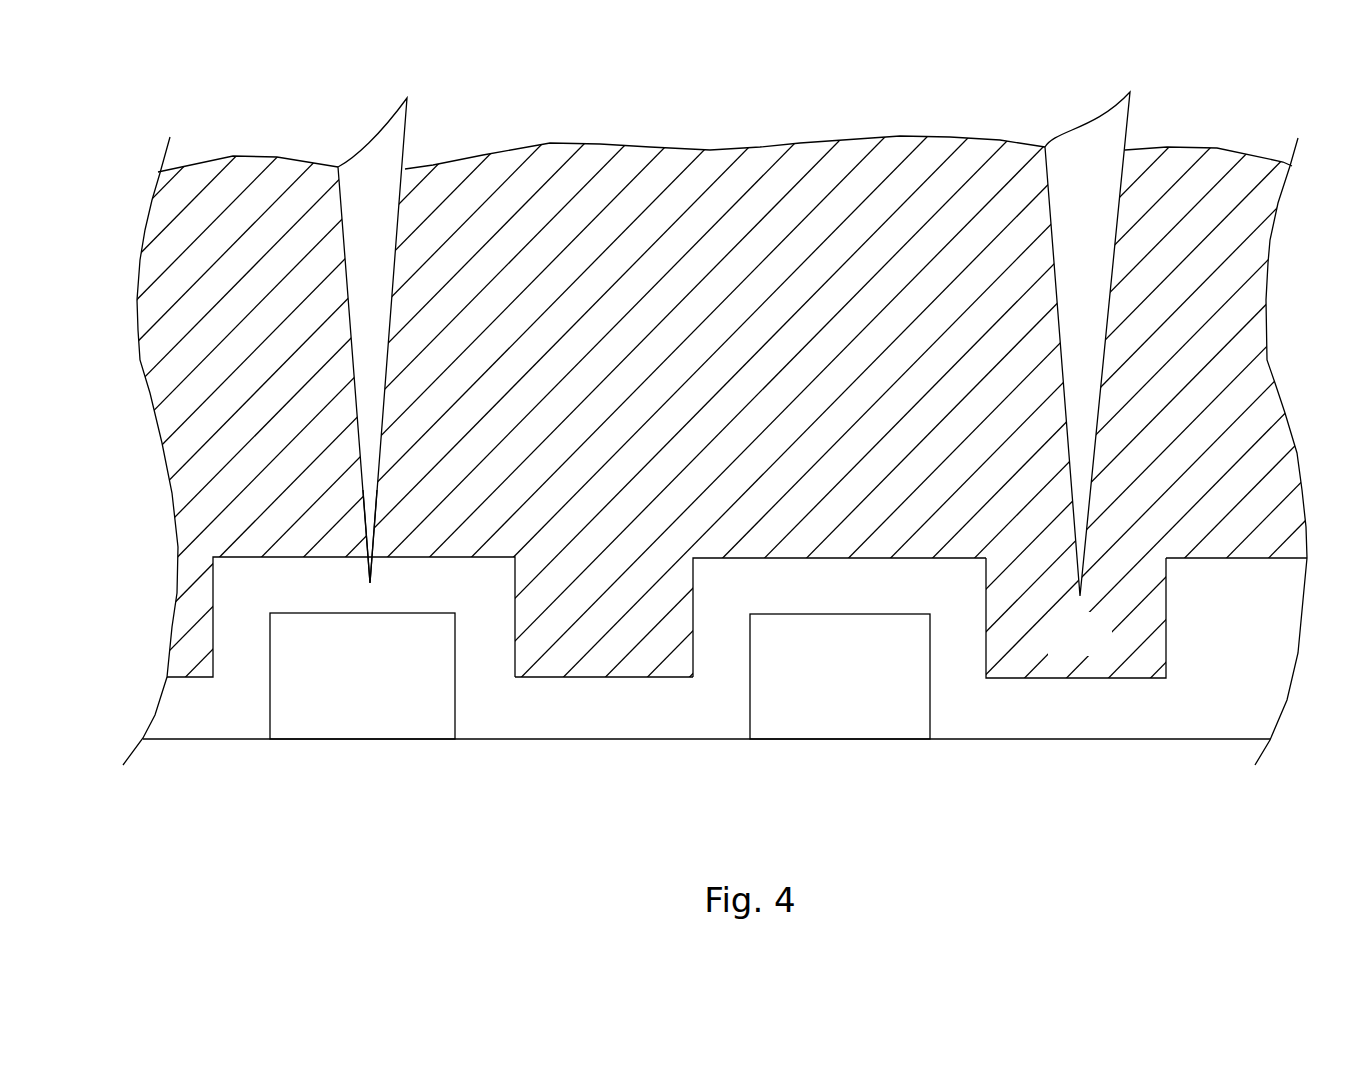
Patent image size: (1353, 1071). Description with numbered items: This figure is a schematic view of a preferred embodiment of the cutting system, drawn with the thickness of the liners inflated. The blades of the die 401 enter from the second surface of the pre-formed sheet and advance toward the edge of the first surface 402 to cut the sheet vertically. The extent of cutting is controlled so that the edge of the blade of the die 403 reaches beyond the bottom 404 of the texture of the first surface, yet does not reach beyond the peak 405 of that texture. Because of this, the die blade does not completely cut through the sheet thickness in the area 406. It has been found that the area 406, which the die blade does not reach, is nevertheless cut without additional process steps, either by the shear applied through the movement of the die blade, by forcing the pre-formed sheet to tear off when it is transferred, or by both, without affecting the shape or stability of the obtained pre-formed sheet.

The blades of the die 401 is at (368, 172).
The first surface 402 is at (487, 763).
The edge of the blade of the die 403 is at (370, 583).
The bottom of the texture of the first surface 404 is at (255, 557).
The peak of the texture of the first surface 405 is at (568, 677).
The area not reached by the die blade 406 is at (1105, 647).